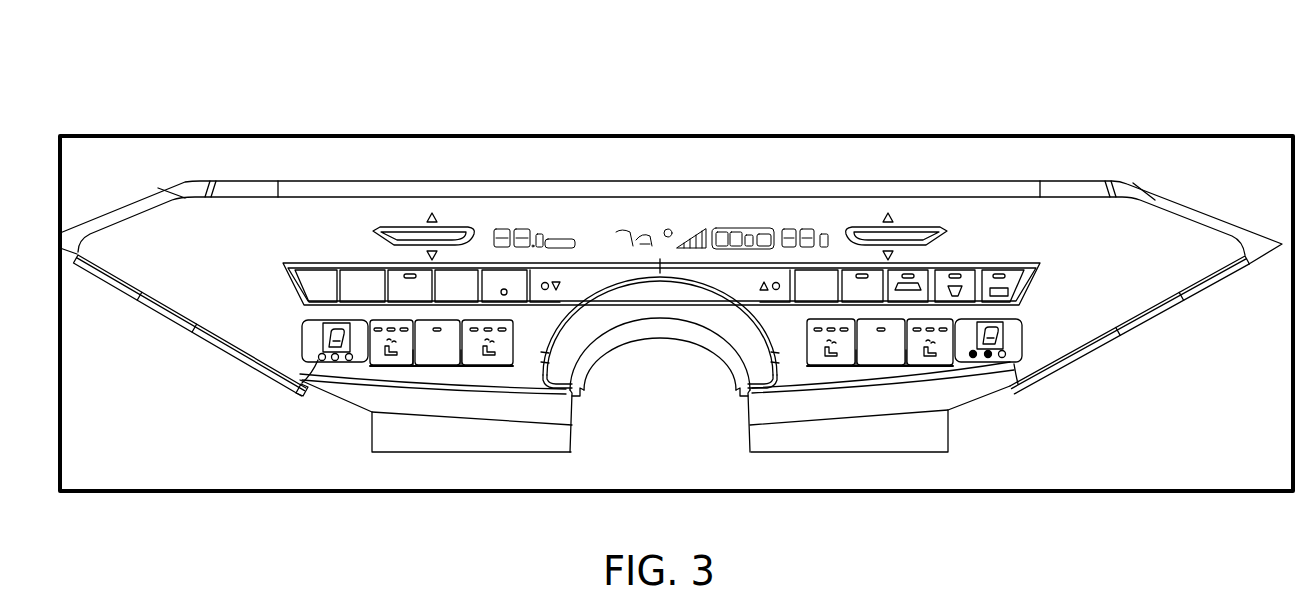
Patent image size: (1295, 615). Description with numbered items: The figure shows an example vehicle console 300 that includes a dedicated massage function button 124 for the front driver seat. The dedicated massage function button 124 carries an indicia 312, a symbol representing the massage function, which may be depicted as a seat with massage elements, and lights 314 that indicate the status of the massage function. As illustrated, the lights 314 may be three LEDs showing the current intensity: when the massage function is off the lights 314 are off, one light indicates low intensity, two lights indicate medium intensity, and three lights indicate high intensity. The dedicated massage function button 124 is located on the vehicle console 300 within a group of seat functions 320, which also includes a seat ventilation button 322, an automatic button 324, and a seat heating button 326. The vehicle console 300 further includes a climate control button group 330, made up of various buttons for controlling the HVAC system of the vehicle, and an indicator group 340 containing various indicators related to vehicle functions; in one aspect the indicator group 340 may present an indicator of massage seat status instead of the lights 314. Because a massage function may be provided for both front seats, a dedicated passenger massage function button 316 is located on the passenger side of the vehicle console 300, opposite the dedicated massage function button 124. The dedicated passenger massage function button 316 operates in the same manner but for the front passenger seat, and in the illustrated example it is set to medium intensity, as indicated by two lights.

The vehicle console 300 is at (212, 63).
The indicator group 340 is at (507, 205).
The climate control button group 330 is at (296, 253).
The dedicated massage function button 124 is at (300, 314).
The indicia 312 is at (318, 338).
The lights 314 is at (298, 390).
The dedicated passenger massage function button 316 is at (1014, 327).
The group of seat functions 320 is at (522, 378).
The seat ventilation button 322 is at (390, 367).
The automatic button 324 is at (438, 367).
The seat heating button 326 is at (487, 367).